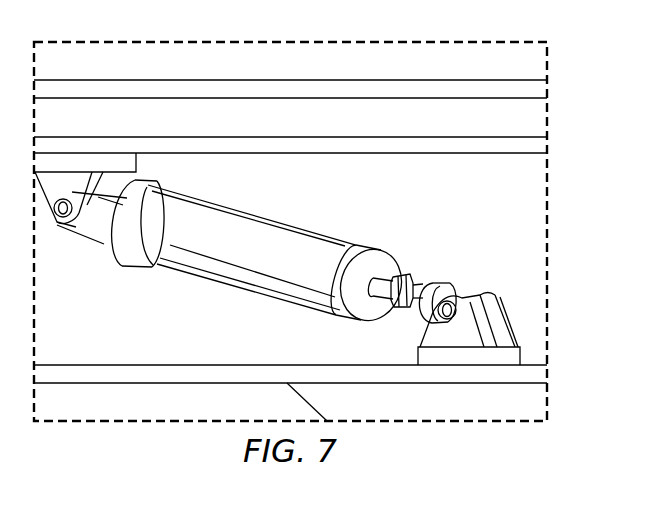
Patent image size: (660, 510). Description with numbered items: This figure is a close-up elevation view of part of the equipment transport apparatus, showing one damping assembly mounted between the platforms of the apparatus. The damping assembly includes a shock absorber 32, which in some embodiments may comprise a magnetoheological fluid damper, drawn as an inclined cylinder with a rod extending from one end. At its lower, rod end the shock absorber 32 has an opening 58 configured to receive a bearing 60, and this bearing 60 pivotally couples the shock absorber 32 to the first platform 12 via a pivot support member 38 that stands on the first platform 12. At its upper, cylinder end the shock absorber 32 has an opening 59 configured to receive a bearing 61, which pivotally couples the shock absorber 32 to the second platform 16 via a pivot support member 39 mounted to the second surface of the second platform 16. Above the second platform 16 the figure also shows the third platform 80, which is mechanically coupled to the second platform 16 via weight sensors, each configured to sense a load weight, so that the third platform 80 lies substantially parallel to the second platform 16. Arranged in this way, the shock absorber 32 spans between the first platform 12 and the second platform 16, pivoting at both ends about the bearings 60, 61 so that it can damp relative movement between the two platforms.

The first platform 12 is at (236, 375).
The second platform 16 is at (367, 137).
The shock absorber 32 is at (250, 228).
The pivot support member 38 is at (491, 357).
The pivot support member 39 is at (140, 164).
The opening 58 is at (433, 323).
The opening 59 is at (61, 225).
The bearing 60 is at (455, 315).
The bearing 61 is at (68, 200).
The third platform 80 is at (413, 80).